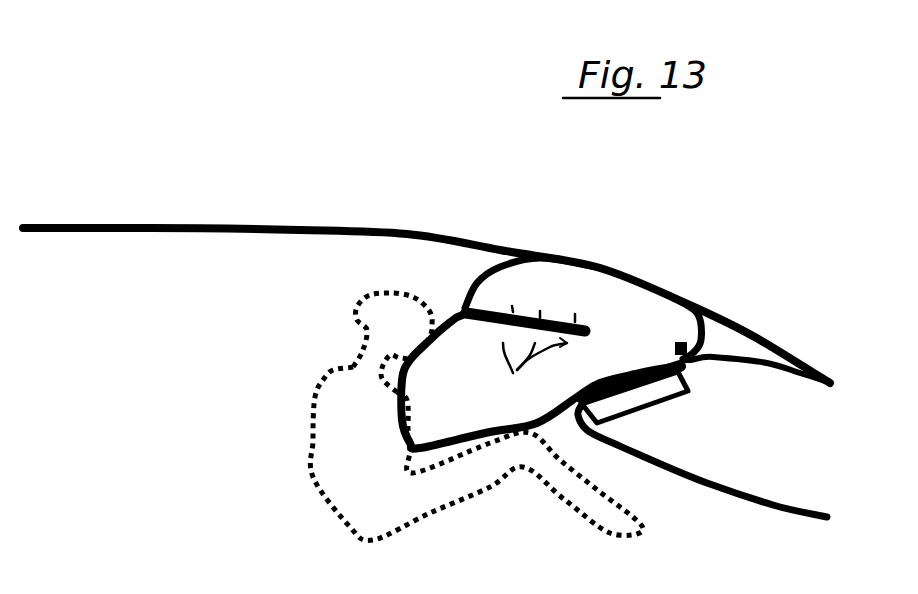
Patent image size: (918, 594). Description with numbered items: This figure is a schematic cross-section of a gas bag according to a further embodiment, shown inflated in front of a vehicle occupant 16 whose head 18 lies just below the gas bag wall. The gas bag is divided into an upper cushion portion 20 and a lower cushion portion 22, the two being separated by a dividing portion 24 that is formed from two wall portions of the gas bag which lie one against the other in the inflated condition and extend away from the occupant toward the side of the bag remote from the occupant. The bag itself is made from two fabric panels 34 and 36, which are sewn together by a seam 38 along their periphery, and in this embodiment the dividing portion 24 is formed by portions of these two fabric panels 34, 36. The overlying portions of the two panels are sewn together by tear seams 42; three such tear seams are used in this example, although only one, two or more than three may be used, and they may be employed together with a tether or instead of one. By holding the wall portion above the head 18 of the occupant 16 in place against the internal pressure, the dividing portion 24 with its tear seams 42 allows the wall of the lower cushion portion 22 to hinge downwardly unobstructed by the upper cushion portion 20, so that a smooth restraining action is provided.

The vehicle occupant 16 is at (333, 470).
The head 18 is at (380, 337).
The upper cushion portion 20 is at (582, 302).
The lower cushion portion 22 is at (433, 422).
The dividing portion 24 is at (460, 313).
The fabric panel 34 is at (502, 270).
The fabric panel 36 is at (397, 392).
The seam 38 is at (681, 341).
The tear seam 42 is at (534, 353).